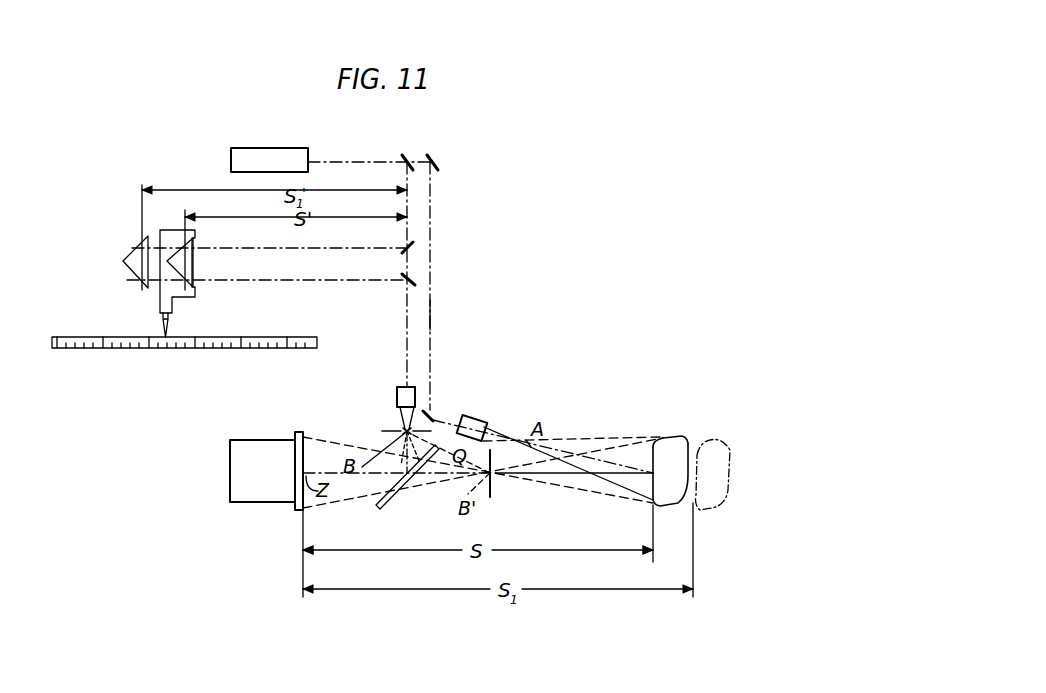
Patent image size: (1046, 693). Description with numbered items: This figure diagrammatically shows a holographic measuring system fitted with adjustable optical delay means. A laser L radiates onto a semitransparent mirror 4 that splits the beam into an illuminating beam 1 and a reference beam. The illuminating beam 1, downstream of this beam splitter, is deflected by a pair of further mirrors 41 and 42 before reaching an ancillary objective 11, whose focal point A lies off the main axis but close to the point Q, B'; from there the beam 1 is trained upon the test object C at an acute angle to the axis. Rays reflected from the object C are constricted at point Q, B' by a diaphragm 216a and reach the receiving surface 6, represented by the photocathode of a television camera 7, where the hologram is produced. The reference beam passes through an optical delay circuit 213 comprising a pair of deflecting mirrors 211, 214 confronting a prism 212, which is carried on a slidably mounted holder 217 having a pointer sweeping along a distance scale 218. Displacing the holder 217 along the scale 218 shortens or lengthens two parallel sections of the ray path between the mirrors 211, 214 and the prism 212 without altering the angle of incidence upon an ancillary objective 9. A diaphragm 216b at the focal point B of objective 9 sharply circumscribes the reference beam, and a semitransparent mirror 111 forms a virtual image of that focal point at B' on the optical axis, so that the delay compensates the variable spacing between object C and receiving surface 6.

The laser L is at (273, 160).
The semitransparent mirror 4 is at (408, 157).
The further mirror 41 is at (440, 157).
The optical delay circuit 213 is at (120, 225).
The prism holder 217 is at (162, 295).
The prism 212 is at (188, 268).
The distance scale 218 is at (157, 349).
The deflecting mirror 211 is at (413, 248).
The deflecting mirror 214 is at (414, 279).
The illuminating beam 1 is at (432, 321).
The ancillary objective 9 is at (403, 387).
The diaphragm 216b is at (398, 429).
The further mirror 42 is at (431, 414).
The ancillary objective 11 is at (474, 424).
The television camera 7 is at (262, 492).
The receiving surface 6 is at (305, 438).
The semitransparent mirror 111 is at (384, 503).
The diaphragm 216a is at (493, 485).
The test object C is at (684, 437).